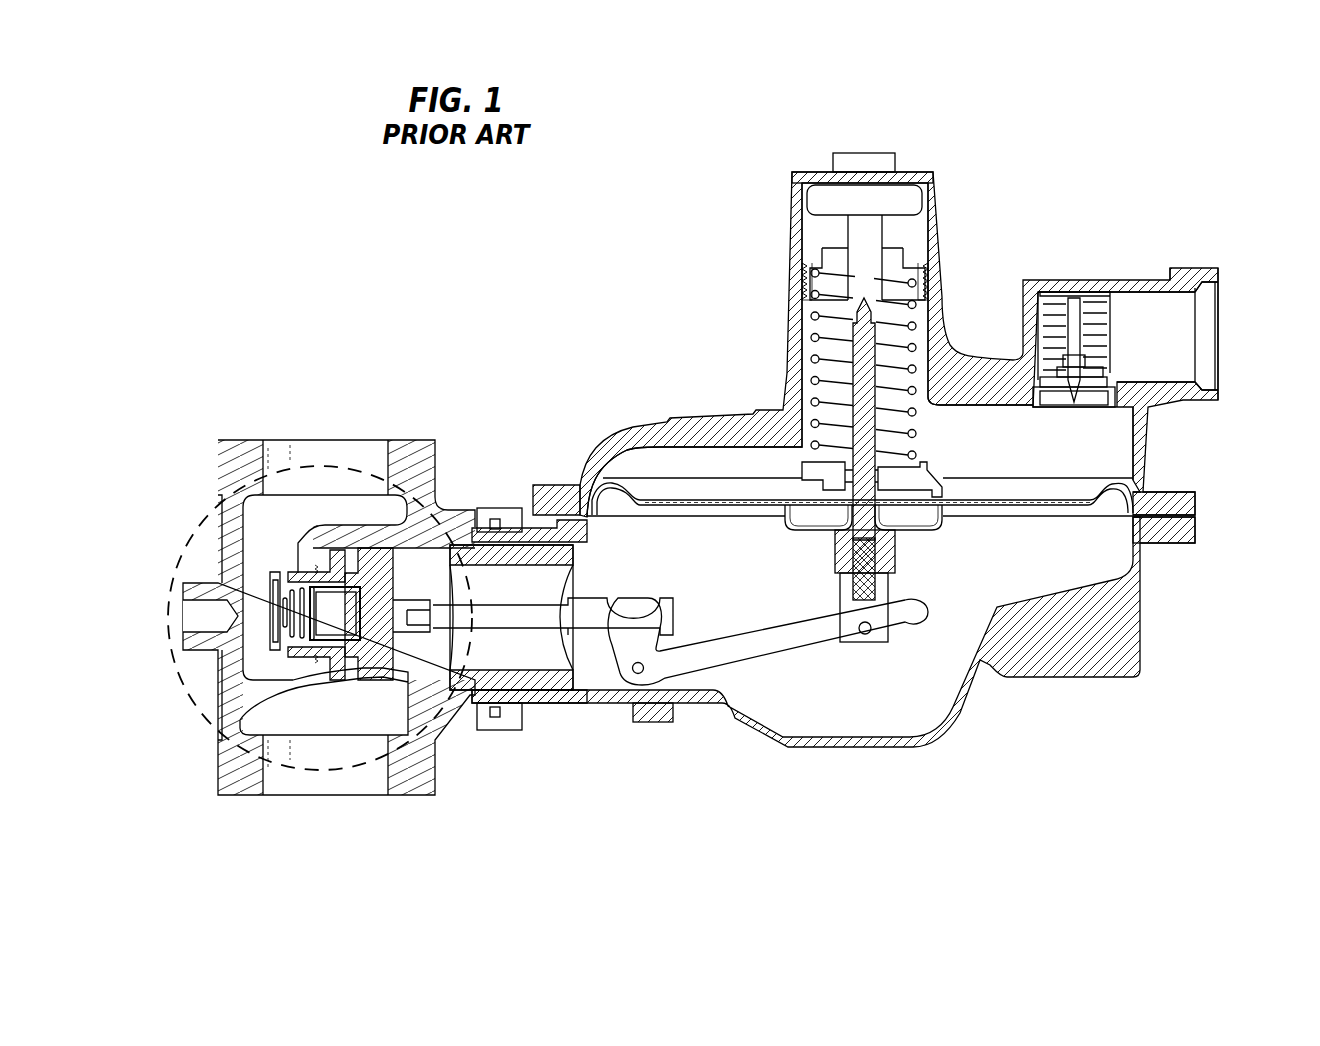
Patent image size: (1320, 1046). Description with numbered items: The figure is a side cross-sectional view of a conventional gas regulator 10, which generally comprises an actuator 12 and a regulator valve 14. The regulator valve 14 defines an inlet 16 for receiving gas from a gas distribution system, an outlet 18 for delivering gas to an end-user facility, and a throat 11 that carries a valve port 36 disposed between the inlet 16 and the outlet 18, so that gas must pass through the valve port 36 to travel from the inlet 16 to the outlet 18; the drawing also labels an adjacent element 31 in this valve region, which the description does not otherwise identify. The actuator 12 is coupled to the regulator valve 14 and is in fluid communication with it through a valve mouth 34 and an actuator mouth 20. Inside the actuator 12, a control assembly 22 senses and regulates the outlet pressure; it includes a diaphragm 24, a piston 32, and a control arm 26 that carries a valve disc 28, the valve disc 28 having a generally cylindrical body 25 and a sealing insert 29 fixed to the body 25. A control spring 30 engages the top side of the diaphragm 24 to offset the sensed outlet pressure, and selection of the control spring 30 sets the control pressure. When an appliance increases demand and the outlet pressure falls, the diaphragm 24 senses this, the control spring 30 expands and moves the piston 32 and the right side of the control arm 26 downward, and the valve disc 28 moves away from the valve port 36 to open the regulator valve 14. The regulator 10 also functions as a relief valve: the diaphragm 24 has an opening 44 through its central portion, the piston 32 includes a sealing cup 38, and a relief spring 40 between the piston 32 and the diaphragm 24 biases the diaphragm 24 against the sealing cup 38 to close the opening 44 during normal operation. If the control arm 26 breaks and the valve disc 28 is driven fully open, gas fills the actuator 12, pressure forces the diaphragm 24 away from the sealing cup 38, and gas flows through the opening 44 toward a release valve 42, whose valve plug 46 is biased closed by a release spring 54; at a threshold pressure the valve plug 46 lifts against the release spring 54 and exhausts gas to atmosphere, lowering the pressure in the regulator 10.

The gas regulator 10 is at (972, 142).
The throat 11 is at (250, 705).
The actuator 12 is at (940, 302).
The regulator valve 14 is at (428, 437).
The inlet 16 is at (268, 468).
The outlet 18 is at (268, 788).
The actuator mouth 20 is at (542, 705).
The control assembly 22 is at (918, 540).
The diaphragm 24 is at (1085, 483).
The body 25 is at (383, 680).
The control arm 26 is at (693, 665).
The valve disc 28 is at (380, 550).
The sealing insert 29 is at (275, 636).
The control spring 30 is at (826, 337).
The valve seat 31 is at (336, 556).
The piston 32 is at (862, 385).
The valve mouth 34 is at (465, 715).
The valve port 36 is at (262, 573).
The sealing cup 38 is at (812, 526).
The relief spring 40 is at (882, 417).
The release valve 42 is at (1105, 340).
The opening 44 is at (858, 432).
The valve plug 46 is at (1092, 408).
The release spring 54 is at (1105, 292).